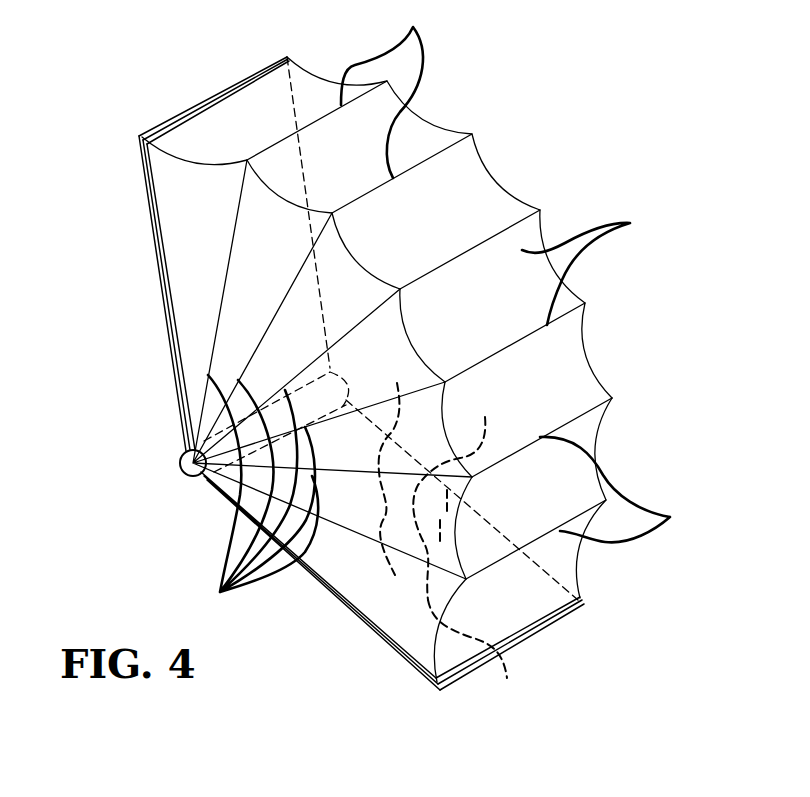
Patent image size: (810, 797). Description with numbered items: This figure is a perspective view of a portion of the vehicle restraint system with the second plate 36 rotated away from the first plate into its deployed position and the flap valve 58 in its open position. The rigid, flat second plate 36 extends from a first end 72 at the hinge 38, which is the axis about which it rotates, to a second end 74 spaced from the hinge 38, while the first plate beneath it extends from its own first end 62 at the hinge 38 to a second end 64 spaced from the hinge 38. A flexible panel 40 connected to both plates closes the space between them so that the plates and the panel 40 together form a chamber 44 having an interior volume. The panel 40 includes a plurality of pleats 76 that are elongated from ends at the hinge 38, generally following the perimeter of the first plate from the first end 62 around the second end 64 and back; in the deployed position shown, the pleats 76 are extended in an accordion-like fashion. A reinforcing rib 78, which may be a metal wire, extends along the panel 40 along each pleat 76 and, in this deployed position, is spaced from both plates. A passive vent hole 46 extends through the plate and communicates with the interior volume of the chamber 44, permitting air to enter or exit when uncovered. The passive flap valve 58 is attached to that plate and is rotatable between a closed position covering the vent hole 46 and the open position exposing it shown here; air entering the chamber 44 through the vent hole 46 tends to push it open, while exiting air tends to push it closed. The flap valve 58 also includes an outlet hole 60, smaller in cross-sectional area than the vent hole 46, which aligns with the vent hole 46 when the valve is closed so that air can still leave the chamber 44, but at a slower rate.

The second plate 36 is at (340, 608).
The hinge 38 is at (163, 315).
The panel 40 is at (463, 208).
The chamber 44 is at (550, 365).
The vent hole 46 is at (474, 656).
The flap valve 58 is at (393, 461).
The outlet hole 60 is at (454, 489).
The first end 62 is at (189, 480).
The second end 64 is at (553, 612).
The first end 72 is at (181, 456).
The second end 74 is at (212, 97).
The pleat 76 is at (263, 502).
The reinforcing rib 78 is at (522, 271).